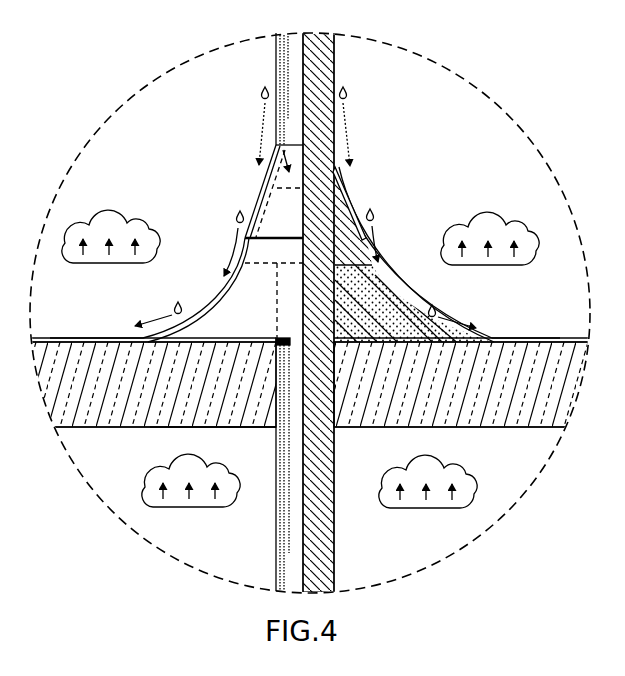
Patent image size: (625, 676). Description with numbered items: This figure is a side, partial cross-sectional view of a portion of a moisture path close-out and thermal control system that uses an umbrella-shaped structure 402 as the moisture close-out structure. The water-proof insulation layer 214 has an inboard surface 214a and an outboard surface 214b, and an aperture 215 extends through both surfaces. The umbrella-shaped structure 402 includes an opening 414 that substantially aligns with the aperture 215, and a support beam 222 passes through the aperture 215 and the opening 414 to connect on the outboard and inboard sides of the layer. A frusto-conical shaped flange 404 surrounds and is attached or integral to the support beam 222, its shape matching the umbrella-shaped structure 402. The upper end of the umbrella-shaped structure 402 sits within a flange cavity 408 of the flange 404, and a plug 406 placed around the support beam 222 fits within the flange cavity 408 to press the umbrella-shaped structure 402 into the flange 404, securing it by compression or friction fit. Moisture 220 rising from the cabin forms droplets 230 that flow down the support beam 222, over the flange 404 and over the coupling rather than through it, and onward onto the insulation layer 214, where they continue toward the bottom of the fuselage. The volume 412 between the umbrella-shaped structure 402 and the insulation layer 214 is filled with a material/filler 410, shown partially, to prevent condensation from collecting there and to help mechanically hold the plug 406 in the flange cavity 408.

The insulation layer 214 is at (572, 341).
The inboard surface 214a is at (218, 428).
The outboard surface 214b is at (45, 338).
The aperture 215 is at (336, 395).
The moisture 220 is at (158, 230).
The support beam 222 is at (283, 87).
The droplets 230 is at (260, 99).
The umbrella-shaped structure 402 is at (212, 306).
The frusto-conical shaped flange 404 is at (266, 177).
The plug 406 is at (346, 212).
The flange cavity 408 is at (267, 201).
The material/filler 410 is at (366, 290).
The volume 412 is at (404, 308).
The opening 414 is at (270, 148).